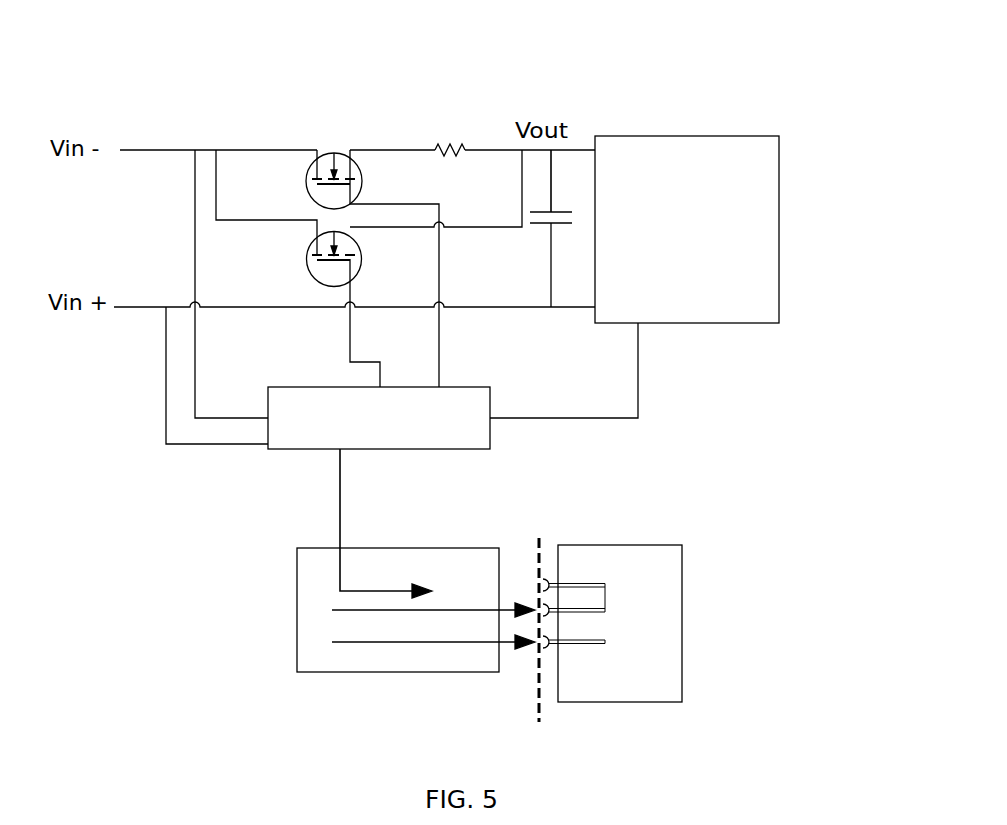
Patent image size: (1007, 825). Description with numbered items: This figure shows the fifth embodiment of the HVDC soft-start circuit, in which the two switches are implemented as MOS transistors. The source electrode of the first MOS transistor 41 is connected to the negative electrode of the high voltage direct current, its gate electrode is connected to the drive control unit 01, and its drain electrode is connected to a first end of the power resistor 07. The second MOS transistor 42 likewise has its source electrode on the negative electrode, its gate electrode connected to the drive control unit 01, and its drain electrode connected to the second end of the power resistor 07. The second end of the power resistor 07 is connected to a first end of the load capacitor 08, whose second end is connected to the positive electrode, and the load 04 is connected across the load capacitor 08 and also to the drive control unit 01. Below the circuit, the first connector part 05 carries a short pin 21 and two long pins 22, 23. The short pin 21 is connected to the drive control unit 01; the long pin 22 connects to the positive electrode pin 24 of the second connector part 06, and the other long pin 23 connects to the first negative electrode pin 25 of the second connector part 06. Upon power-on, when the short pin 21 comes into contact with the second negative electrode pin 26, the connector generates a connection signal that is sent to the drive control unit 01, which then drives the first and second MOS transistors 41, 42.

The drive control unit 01 is at (490, 407).
The load 04 is at (780, 280).
The first connector part 05 is at (297, 612).
The second connector part 06 is at (682, 617).
The power resistor 07 is at (450, 137).
The load capacitor 08 is at (555, 200).
The short pin 21 is at (390, 590).
The long pin 22 is at (432, 642).
The long pin 23 is at (372, 612).
The positive electrode pin 24 is at (575, 643).
The first negative electrode pin 25 is at (579, 611).
The second negative electrode pin 26 is at (578, 583).
The first MOS transistor 41 is at (334, 160).
The second MOS transistor 42 is at (310, 270).